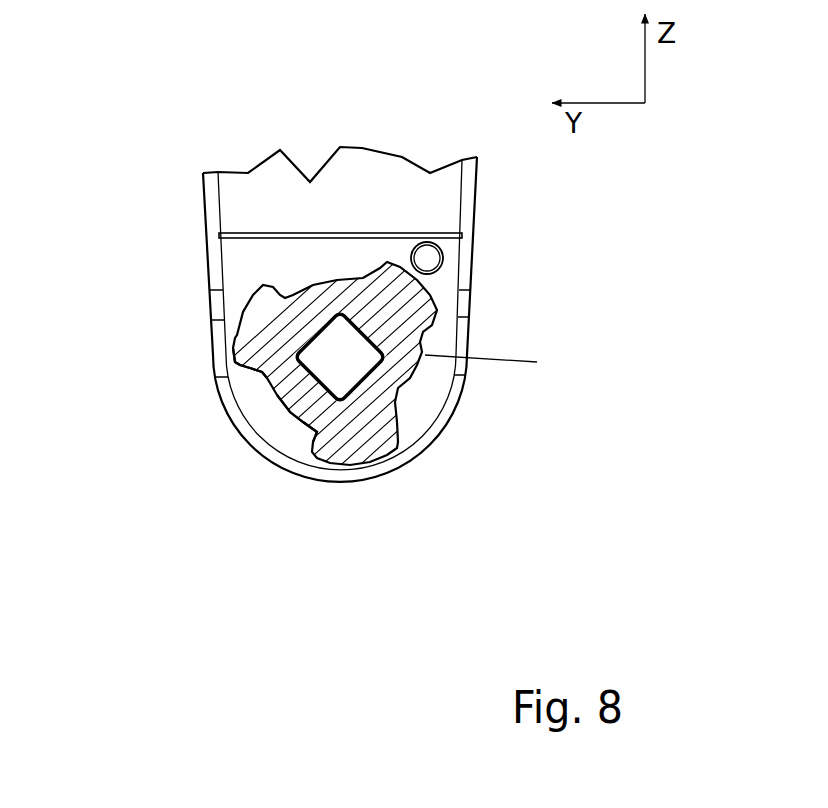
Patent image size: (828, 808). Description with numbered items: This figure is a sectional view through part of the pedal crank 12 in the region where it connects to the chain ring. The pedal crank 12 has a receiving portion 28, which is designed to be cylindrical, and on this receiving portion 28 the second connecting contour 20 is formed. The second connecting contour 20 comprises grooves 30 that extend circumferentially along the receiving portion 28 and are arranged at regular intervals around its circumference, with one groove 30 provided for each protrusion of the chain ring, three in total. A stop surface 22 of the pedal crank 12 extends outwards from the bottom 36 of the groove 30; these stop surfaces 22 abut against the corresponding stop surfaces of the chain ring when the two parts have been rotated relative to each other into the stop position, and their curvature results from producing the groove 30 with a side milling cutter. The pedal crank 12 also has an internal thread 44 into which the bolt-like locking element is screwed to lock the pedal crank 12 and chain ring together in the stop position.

The pedal crank 12 is at (207, 222).
The second connecting contour 20 is at (248, 298).
The stop surface 22 is at (245, 370).
The receiving portion 28 is at (352, 442).
The groove 30 is at (343, 367).
The bottom of the groove 36 is at (293, 423).
The internal thread 44 is at (427, 258).